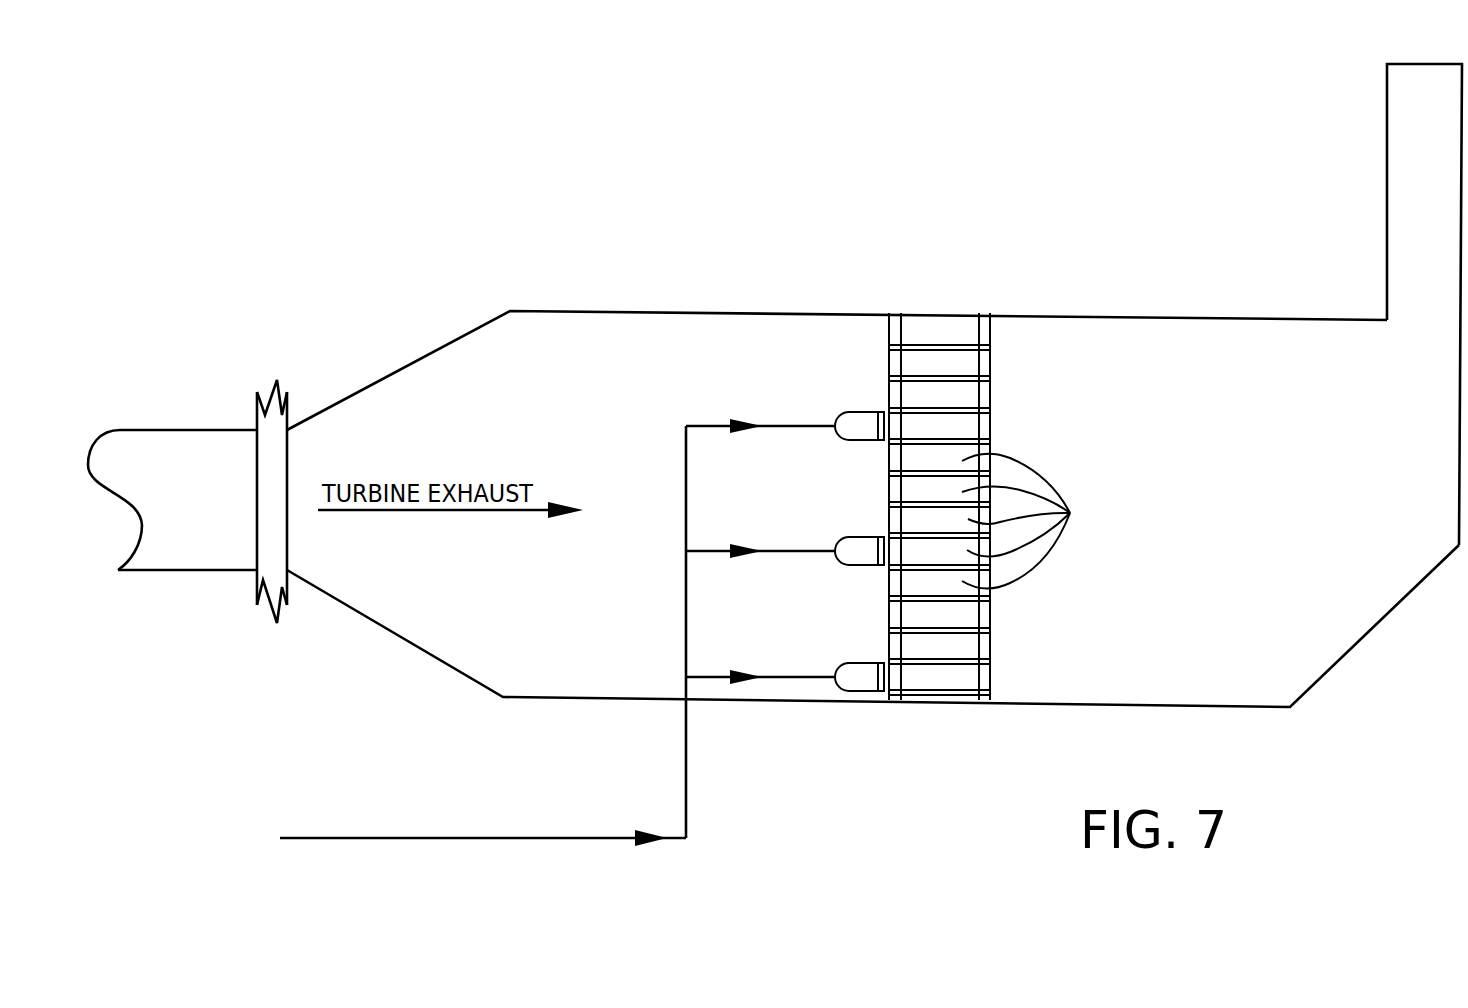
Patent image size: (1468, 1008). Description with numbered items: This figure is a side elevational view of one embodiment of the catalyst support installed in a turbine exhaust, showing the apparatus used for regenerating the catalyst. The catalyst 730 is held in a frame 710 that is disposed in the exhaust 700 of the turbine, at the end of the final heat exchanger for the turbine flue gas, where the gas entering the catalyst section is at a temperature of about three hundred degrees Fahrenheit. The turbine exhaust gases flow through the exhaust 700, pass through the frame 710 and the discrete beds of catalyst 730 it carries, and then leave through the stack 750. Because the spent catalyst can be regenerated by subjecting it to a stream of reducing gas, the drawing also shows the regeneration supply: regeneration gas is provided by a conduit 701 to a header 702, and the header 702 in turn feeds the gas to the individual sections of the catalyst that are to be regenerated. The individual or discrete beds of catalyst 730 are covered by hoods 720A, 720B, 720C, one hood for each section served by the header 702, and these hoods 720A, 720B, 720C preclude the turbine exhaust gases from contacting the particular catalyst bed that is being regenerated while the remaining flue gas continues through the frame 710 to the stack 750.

The exhaust 700 is at (518, 292).
The stack 750 is at (1387, 183).
The frame 710 is at (993, 362).
The catalyst 730 is at (1039, 521).
The hood 720A is at (862, 410).
The hood 720B is at (862, 535).
The hood 720C is at (858, 661).
The header 702 is at (686, 648).
The conduit 701 is at (525, 840).